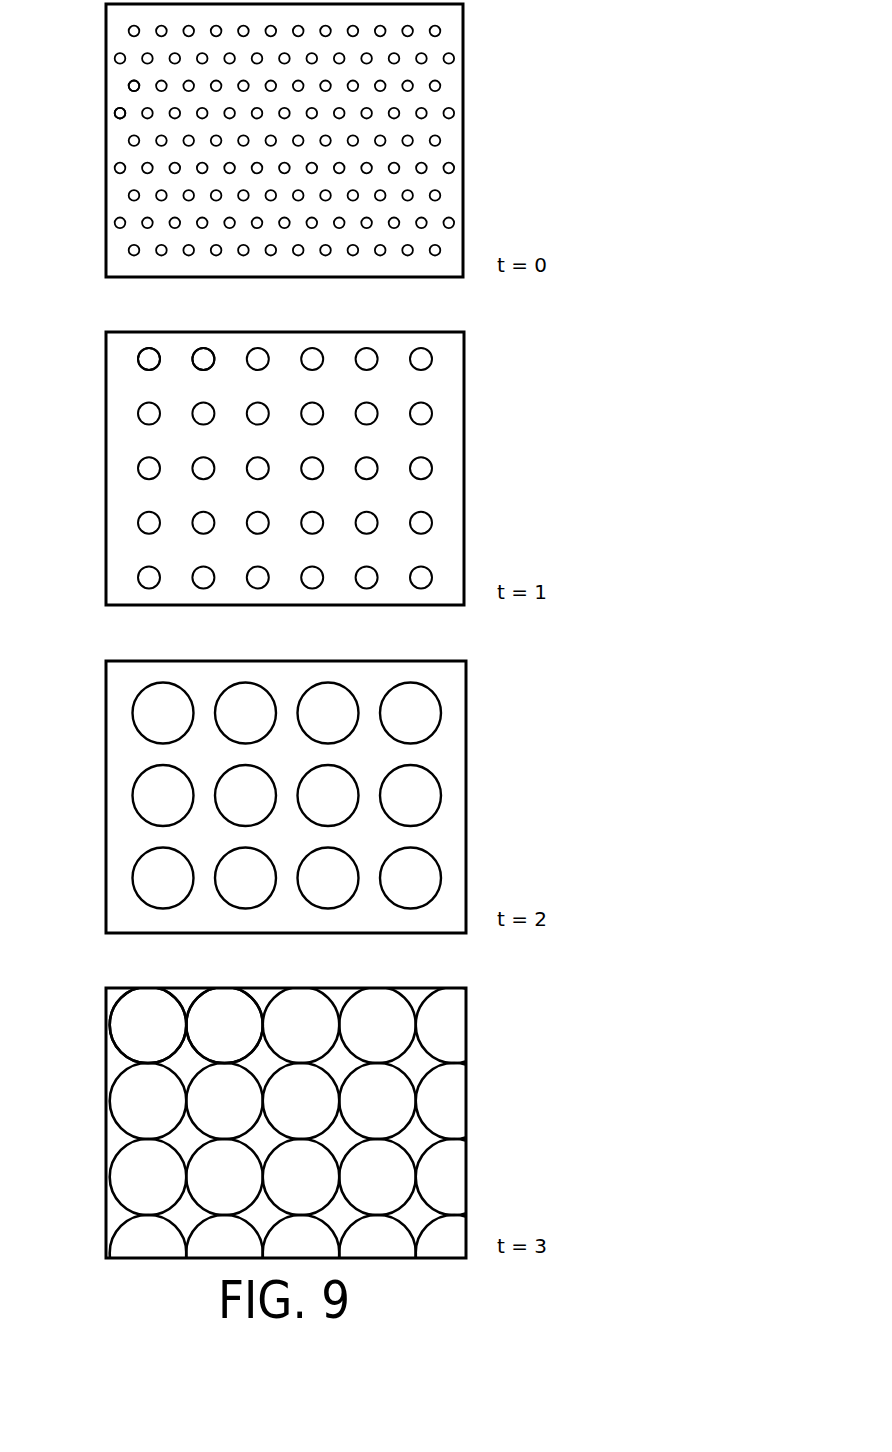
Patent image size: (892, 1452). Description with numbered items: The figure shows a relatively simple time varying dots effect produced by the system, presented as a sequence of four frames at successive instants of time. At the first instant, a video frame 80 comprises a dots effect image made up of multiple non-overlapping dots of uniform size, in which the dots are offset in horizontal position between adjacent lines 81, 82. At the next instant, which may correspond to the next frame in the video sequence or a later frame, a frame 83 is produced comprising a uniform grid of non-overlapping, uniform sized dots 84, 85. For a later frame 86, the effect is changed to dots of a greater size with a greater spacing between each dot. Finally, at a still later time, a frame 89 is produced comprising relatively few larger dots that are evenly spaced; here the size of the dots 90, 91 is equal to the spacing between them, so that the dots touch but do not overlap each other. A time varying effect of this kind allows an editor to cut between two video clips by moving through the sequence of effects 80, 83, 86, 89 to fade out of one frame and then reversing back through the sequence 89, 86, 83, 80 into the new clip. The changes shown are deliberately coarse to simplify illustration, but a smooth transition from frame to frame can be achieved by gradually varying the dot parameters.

The video frame 80 is at (465, 33).
The line of dots 81 is at (108, 86).
The adjacent line of dots 82 is at (104, 122).
The frame 83 is at (465, 354).
The dot 84 is at (149, 357).
The dot 85 is at (205, 357).
The frame 86 is at (467, 684).
The frame 89 is at (467, 1010).
The dot 90 is at (152, 1007).
The dot 91 is at (230, 1007).